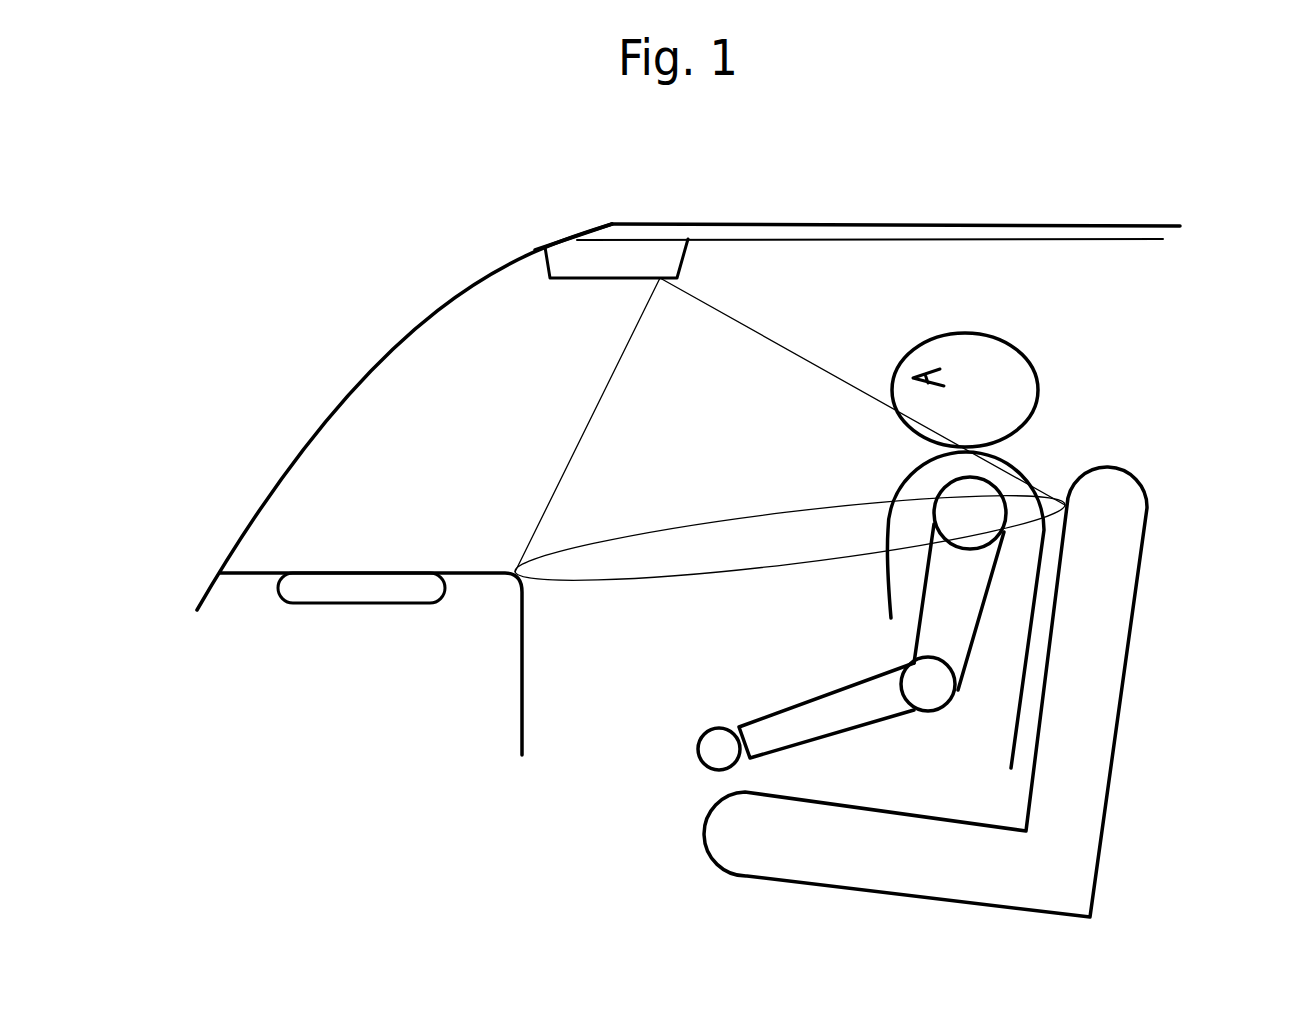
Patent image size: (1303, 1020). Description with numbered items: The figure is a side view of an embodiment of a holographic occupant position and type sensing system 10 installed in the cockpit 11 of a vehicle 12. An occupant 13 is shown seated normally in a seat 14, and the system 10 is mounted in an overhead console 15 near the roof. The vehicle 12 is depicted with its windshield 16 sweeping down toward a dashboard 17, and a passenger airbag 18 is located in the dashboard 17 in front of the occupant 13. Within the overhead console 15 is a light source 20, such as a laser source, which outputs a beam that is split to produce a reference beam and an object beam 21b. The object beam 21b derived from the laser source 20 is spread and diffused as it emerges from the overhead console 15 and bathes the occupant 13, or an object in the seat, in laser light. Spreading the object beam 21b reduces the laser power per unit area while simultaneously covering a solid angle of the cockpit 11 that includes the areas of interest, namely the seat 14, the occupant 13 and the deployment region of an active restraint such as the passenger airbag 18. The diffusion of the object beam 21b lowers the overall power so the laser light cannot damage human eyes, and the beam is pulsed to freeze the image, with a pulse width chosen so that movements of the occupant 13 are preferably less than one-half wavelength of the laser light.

The holographic occupant position and type sensing system 10 is at (515, 237).
The cockpit 11 is at (724, 459).
The vehicle 12 is at (1220, 170).
The occupant 13 is at (908, 478).
The seat 14 is at (1125, 475).
The overhead console 15 is at (683, 262).
The windshield 16 is at (331, 416).
The dashboard 17 is at (468, 572).
The passenger airbag 18 is at (377, 585).
The light source 20 is at (666, 272).
The object beam 21b is at (790, 345).